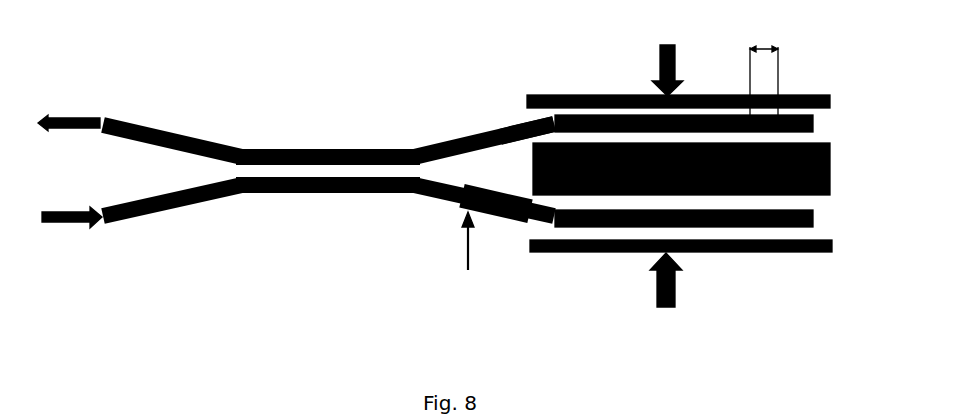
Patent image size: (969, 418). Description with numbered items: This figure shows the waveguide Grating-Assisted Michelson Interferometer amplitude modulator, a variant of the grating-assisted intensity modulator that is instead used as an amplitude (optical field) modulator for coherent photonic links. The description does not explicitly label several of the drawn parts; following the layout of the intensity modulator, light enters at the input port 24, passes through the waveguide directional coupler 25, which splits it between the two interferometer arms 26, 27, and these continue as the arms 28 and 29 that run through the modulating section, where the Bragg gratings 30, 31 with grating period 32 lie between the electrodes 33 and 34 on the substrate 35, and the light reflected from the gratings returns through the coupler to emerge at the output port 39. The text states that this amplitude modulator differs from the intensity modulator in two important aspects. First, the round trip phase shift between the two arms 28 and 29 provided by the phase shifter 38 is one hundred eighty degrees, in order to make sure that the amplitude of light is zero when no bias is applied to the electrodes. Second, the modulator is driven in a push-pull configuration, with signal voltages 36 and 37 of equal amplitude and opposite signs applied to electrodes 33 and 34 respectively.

The input port 24 is at (98, 248).
The coupling region of waveguides 25 is at (261, 166).
The upper waveguide arm 26 is at (484, 135).
The lower waveguide arm 27 is at (484, 205).
The arm 28 is at (525, 116).
The arm 29 is at (505, 195).
The upper periodically poled grating 30 is at (707, 128).
The lower periodically poled grating 31 is at (707, 221).
The grating period Λ 32 is at (786, 63).
The electrode 33 is at (678, 91).
The electrode 34 is at (681, 260).
The substrate 35 is at (681, 169).
The signal voltage 36 is at (690, 64).
The signal voltage 37 is at (701, 299).
The phase shifter 38 is at (468, 283).
The output port 39 is at (97, 96).